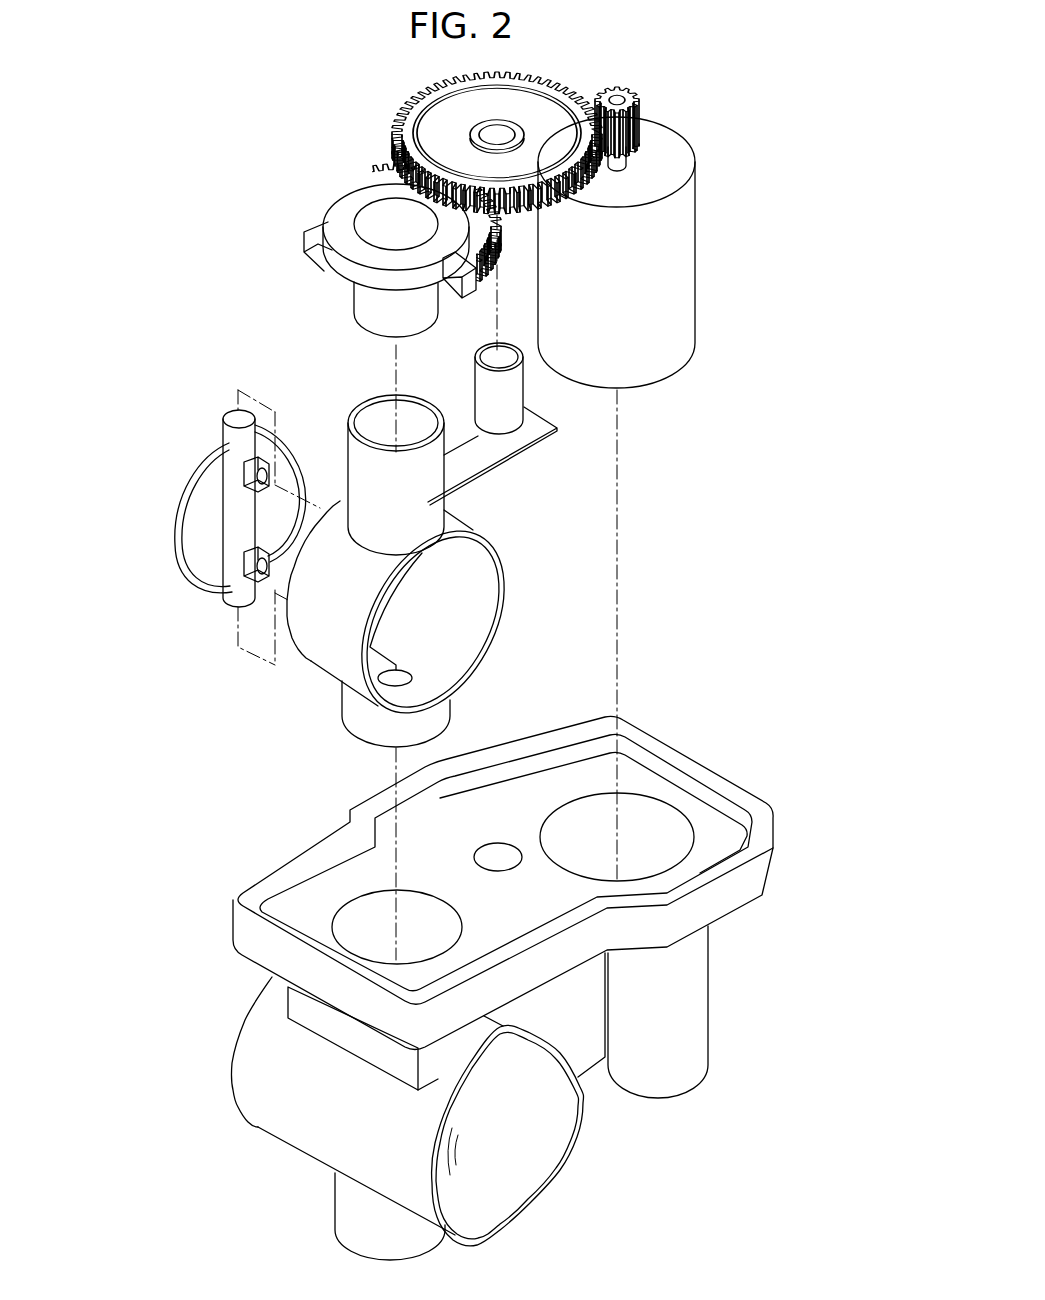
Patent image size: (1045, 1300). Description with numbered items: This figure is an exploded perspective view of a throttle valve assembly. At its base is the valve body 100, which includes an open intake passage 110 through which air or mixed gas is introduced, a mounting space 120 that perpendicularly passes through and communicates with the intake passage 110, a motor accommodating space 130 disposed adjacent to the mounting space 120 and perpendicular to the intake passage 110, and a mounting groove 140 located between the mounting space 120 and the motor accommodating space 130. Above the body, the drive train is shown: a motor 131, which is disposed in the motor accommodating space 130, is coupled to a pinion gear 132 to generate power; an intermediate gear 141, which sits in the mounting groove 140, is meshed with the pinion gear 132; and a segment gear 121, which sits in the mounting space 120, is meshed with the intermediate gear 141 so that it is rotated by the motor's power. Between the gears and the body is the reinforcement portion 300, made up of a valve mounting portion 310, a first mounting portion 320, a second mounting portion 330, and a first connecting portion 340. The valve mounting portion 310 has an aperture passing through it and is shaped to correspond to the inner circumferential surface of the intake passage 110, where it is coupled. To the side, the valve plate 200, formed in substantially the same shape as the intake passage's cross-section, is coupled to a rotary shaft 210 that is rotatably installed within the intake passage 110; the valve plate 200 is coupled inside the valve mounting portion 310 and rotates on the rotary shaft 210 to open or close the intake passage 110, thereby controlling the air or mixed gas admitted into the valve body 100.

The valve body 100 is at (532, 954).
The intake passage 110 is at (520, 1178).
The mounting space 120 is at (352, 918).
The segment gear 121 is at (330, 216).
The motor accommodating space 130 is at (640, 852).
The motor 131 is at (685, 245).
The pinion gear 132 is at (642, 118).
The mounting groove 140 is at (498, 845).
The intermediate gear 141 is at (393, 128).
The valve plate 200 is at (202, 490).
The rotary shaft 210 is at (233, 418).
The reinforcement portion 300 is at (508, 648).
The valve mounting portion 310 is at (592, 540).
The first mounting portion 320 is at (375, 398).
The second mounting portion 330 is at (523, 388).
The first connecting portion 340 is at (497, 456).